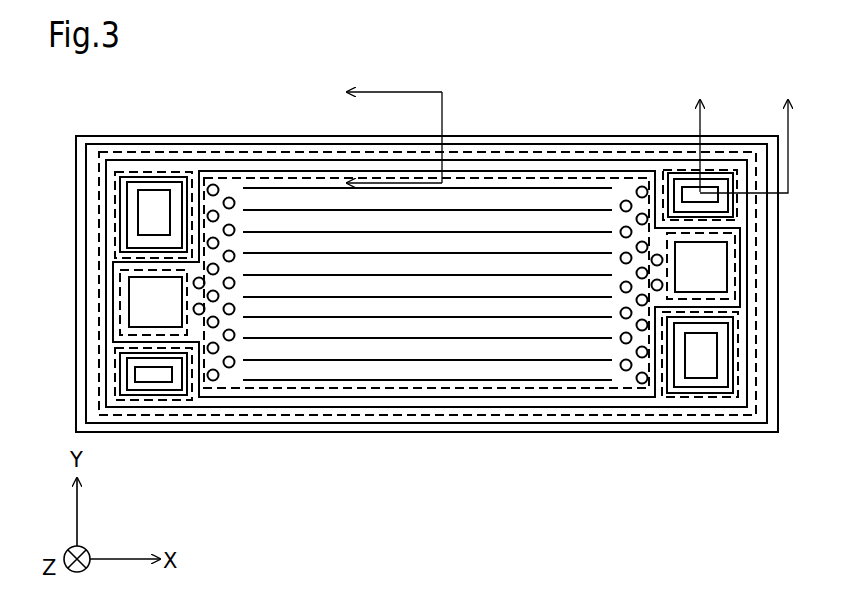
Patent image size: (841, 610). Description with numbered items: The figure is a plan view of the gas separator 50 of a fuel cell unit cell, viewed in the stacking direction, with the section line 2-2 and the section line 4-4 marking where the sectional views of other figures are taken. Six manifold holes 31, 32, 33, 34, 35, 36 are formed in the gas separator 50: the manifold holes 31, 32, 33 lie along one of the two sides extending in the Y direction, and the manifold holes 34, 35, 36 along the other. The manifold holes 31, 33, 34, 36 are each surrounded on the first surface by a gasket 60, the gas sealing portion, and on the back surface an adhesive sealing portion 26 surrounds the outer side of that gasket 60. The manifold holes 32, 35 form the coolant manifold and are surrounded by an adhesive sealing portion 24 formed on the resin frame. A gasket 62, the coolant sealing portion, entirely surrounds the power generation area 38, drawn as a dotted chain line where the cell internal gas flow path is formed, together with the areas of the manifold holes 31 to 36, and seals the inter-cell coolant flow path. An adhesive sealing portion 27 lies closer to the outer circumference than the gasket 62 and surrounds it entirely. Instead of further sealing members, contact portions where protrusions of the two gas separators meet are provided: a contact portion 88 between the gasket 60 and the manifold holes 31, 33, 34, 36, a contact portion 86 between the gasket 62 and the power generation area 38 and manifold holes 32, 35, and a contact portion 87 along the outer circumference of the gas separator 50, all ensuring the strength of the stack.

The section line 2- 2 is at (382, 141).
The section line 4- 4 is at (745, 133).
The adhesive sealing portion 24 is at (120, 326).
The adhesive sealing portion 26 is at (735, 205).
The adhesive sealing portion 27 is at (645, 415).
The manifold hole 31 is at (148, 204).
The manifold hole 32 is at (148, 298).
The manifold hole 33 is at (148, 373).
The manifold hole 34 is at (718, 197).
The manifold hole 35 is at (707, 260).
The manifold hole 36 is at (707, 357).
The power generation area 38 is at (320, 388).
The gas separator 50 is at (472, 128).
The gasket 60 is at (692, 173).
The gasket 62 is at (598, 408).
The contact portion 86 is at (502, 397).
The contact portion 87 is at (85, 155).
The contact portion 88 is at (677, 178).